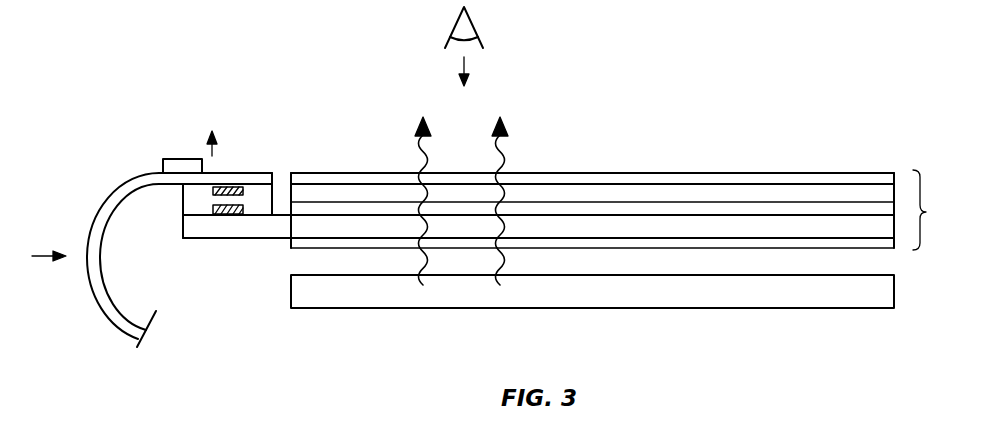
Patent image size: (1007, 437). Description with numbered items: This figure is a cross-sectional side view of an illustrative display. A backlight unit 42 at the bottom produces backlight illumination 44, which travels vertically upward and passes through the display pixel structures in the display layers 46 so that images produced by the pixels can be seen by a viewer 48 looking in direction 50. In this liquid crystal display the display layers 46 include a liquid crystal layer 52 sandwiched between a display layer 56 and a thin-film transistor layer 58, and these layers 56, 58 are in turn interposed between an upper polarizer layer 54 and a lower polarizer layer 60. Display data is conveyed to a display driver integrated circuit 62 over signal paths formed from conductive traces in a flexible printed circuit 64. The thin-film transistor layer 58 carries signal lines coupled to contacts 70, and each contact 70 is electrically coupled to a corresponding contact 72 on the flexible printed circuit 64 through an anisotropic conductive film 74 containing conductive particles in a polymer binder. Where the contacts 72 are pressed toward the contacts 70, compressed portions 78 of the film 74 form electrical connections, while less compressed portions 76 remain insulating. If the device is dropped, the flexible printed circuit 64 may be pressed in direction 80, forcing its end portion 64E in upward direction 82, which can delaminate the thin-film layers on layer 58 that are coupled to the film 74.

The backlight unit 42 is at (625, 292).
The backlight illumination 44 is at (430, 148).
The display layers 46 is at (619, 210).
The viewer 48 is at (477, 25).
The viewing direction 50 is at (467, 70).
The liquid crystal layer 52 is at (682, 208).
The upper polarizer layer 54 is at (815, 180).
The display layer 56 is at (741, 196).
The thin-film transistor layer 58 is at (813, 228).
The lower polarizer layer 60 is at (783, 243).
The display driver integrated circuit 62 is at (163, 167).
The flexible printed circuit 64 is at (96, 219).
The end portion of flexible printed circuit 64E is at (222, 178).
The contacts 70 is at (227, 215).
The contacts 72 is at (233, 187).
The anisotropic conductive film 74 is at (192, 200).
The less compressed portions of film 76 is at (184, 192).
The compressed portions of film 78 is at (212, 205).
The direction 80 is at (43, 258).
The upwards direction 82 is at (208, 150).